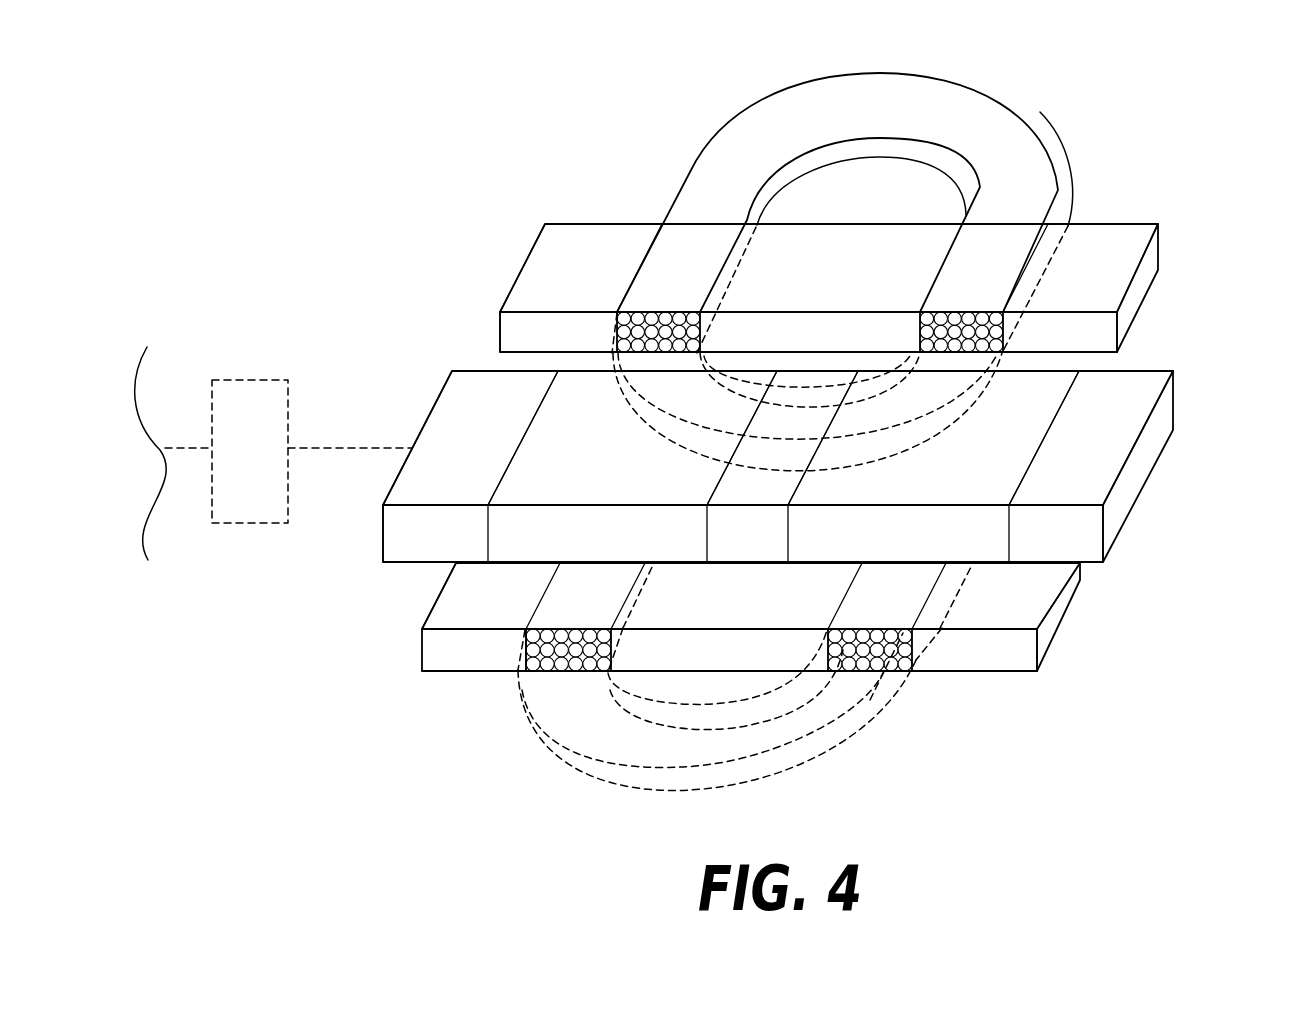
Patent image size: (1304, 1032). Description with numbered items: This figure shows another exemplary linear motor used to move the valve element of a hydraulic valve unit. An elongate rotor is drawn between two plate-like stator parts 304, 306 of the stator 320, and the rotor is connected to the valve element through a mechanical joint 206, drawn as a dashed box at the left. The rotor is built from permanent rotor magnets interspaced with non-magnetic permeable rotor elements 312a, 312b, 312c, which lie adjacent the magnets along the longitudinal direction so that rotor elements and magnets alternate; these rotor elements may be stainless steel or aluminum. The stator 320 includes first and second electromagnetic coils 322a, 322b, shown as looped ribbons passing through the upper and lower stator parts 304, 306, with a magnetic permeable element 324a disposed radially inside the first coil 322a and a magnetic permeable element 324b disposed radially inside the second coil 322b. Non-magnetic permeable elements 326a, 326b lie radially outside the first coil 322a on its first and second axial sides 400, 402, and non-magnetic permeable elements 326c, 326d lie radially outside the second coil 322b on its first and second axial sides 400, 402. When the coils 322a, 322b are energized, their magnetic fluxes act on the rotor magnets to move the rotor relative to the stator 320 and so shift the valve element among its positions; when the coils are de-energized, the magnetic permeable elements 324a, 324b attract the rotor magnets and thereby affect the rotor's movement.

The mechanical joint 206 is at (268, 396).
The upper plate 304 is at (440, 365).
The lower plate 306 is at (405, 653).
The non-magnetic permeable rotor element 312a is at (407, 473).
The non-magnetic permeable rotor element 312b is at (760, 552).
The non-magnetic permeable rotor element 312c is at (1118, 453).
The stator 320 is at (1098, 151).
The first electromagnetic coil 322a is at (1008, 110).
The second electromagnetic coil 322b is at (897, 605).
The magnetic permeable element 324a is at (793, 243).
The magnetic permeable element 324b is at (725, 658).
The non-magnetic permeable element 326a is at (597, 232).
The non-magnetic permeable element 326b is at (1137, 230).
The non-magnetic permeable element 326c is at (463, 650).
The non-magnetic permeable element 326d is at (1037, 593).
The first axial side 400 is at (360, 502).
The second axial side 402 is at (1265, 533).